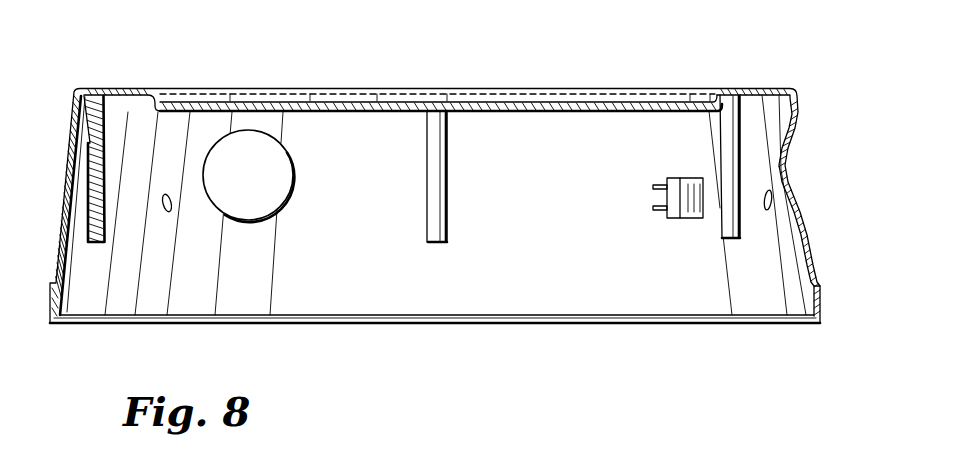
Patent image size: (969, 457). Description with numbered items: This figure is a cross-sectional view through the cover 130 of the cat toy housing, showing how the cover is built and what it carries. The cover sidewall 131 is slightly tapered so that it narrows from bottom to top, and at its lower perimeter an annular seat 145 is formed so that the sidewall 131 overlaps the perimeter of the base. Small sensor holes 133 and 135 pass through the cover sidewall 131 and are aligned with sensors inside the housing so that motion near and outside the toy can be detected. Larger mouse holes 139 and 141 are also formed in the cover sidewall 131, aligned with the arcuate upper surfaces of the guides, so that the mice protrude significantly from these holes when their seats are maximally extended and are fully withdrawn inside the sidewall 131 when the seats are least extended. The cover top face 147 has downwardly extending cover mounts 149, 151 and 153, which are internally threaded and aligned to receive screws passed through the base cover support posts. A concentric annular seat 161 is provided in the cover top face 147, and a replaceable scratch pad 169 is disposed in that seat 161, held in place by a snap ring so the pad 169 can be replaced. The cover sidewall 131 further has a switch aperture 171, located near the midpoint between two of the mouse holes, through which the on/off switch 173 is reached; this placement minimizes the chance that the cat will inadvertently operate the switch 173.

The cover 130 is at (748, 74).
The cover sidewall 131 is at (67, 192).
The sensor hole 133 is at (766, 212).
The sensor hole 135 is at (170, 210).
The mouse hole 139 is at (798, 188).
The mouse hole 141 is at (292, 167).
The annular seat 145 is at (827, 297).
The cover top face 147 is at (133, 88).
The cover mount 149 is at (733, 137).
The cover mount 151 is at (432, 230).
The cover mount 153 is at (93, 133).
The annular seat 161 is at (583, 107).
The scratch pad 169 is at (503, 97).
The switch aperture 171 is at (685, 177).
The on/off switch 173 is at (660, 205).